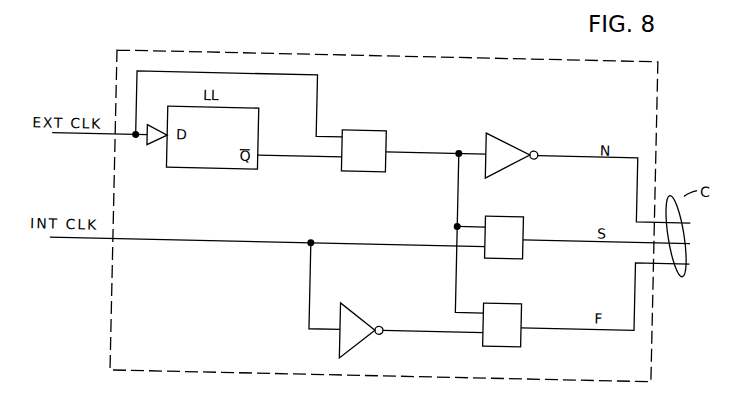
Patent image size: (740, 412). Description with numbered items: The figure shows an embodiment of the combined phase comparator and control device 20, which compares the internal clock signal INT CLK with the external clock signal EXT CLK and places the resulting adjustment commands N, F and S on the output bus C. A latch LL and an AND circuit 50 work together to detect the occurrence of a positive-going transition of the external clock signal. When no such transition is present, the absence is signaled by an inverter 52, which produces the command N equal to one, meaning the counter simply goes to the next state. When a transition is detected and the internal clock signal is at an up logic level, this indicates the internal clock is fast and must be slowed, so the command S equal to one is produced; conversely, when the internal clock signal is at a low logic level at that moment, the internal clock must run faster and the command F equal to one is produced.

The combined phase comparator and control device 20 is at (191, 48).
The AND circuit 50 is at (365, 125).
The inverter 52 is at (507, 137).